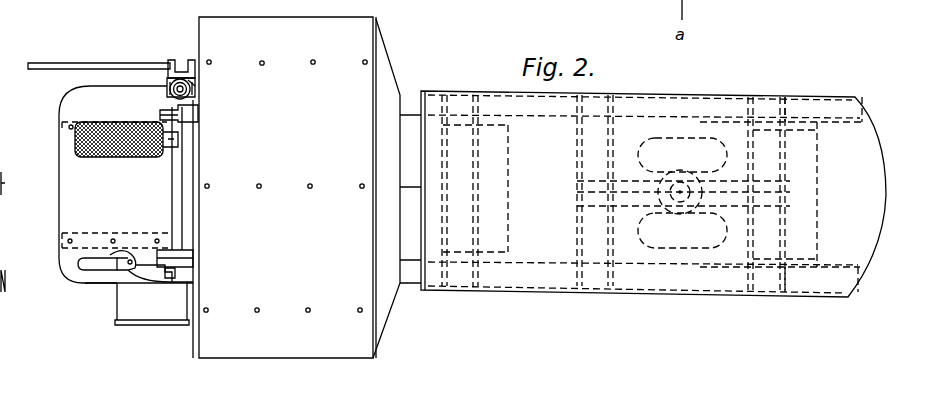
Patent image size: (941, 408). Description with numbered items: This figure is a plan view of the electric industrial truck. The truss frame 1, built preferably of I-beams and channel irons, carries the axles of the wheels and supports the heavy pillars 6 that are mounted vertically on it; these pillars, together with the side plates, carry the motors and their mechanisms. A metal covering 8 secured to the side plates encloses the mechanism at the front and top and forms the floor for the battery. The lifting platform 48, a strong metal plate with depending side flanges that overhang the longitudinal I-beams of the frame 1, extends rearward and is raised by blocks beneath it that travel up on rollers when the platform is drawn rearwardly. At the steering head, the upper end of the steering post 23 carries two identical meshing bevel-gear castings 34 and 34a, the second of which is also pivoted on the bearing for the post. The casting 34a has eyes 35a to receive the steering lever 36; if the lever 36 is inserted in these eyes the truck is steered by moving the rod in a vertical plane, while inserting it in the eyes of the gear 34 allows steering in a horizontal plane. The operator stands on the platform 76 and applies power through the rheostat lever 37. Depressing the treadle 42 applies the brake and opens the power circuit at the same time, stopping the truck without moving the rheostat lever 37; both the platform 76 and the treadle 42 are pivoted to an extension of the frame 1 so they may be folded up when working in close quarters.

The truss frame 1 is at (403, 96).
The pillars 6 is at (190, 113).
The metal covering 8 is at (296, 187).
The steering post 23 is at (197, 88).
The bevel-gear casting 34 is at (172, 88).
The bevel-gear casting 34a is at (190, 82).
The eyes 35a is at (172, 60).
The steering lever 36 is at (88, 67).
The rheostat lever 37 is at (93, 272).
The treadle 42 is at (111, 158).
The lifting platform 48 is at (691, 106).
The platform 76 is at (126, 184).